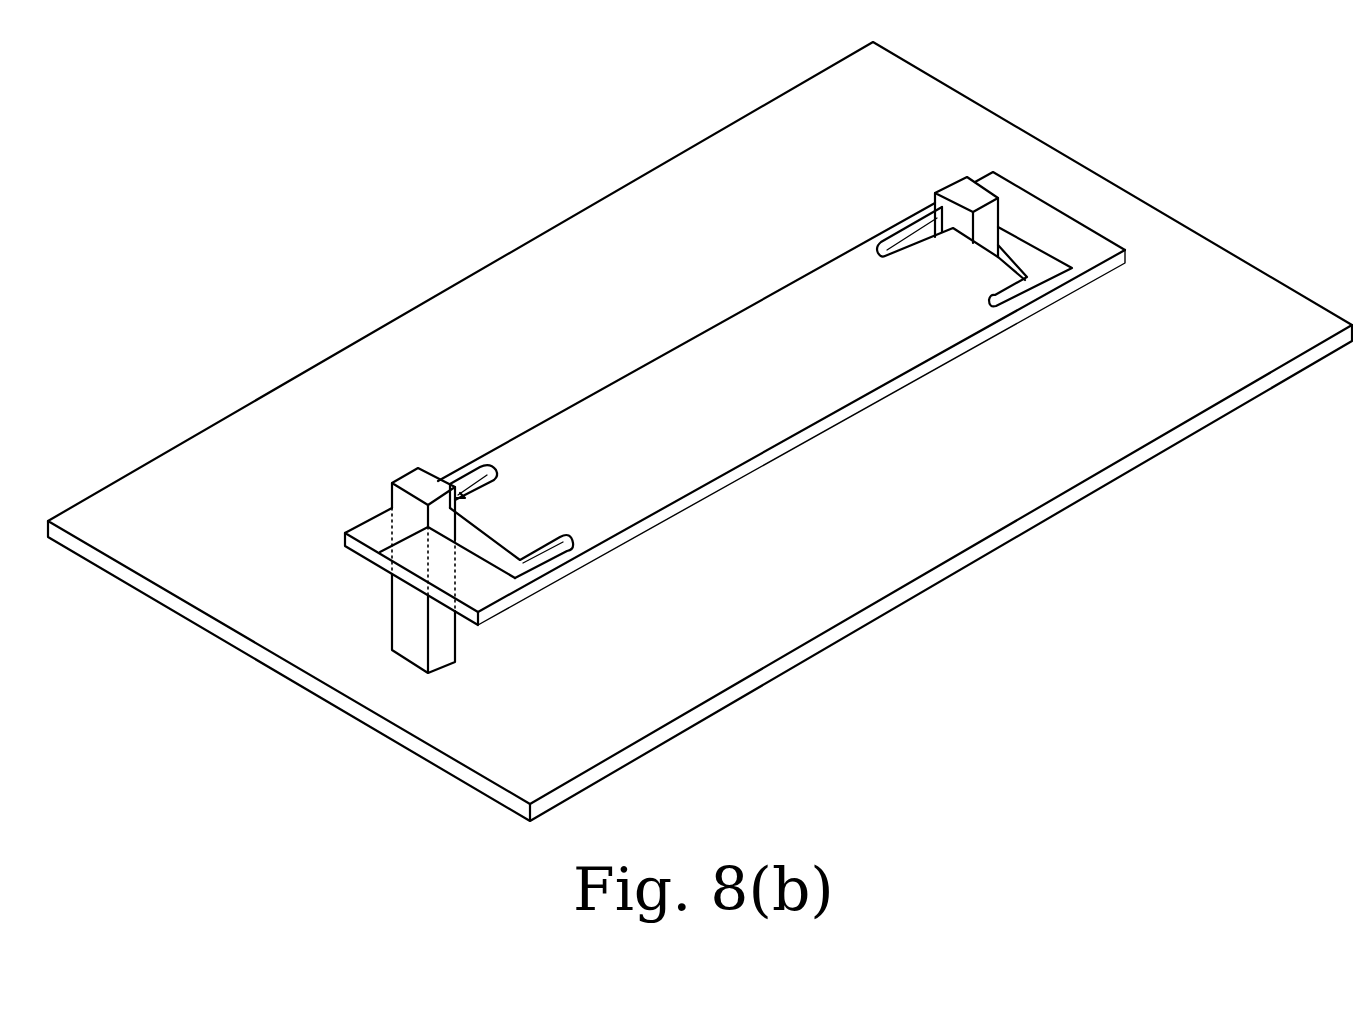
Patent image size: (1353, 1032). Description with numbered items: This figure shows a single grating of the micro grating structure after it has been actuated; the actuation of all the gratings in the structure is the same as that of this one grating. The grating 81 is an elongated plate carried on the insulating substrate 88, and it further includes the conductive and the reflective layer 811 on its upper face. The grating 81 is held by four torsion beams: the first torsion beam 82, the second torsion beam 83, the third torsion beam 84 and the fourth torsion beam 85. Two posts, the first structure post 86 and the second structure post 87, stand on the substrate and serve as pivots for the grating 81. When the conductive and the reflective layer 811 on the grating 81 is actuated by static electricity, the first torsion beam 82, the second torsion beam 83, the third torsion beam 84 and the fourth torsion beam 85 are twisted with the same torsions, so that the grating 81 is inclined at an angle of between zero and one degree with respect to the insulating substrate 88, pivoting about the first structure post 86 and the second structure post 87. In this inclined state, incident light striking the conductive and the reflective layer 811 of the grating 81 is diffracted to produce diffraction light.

The grating 81 is at (930, 370).
The conductive and reflective layer 811 is at (748, 410).
The first torsion beam 82 is at (623, 527).
The second torsion beam 83 is at (1047, 310).
The third torsion beam 84 is at (468, 462).
The fourth torsion beam 85 is at (866, 244).
The first structure post 86 is at (412, 483).
The second structure post 87 is at (963, 192).
The insulating substrate 88 is at (770, 610).